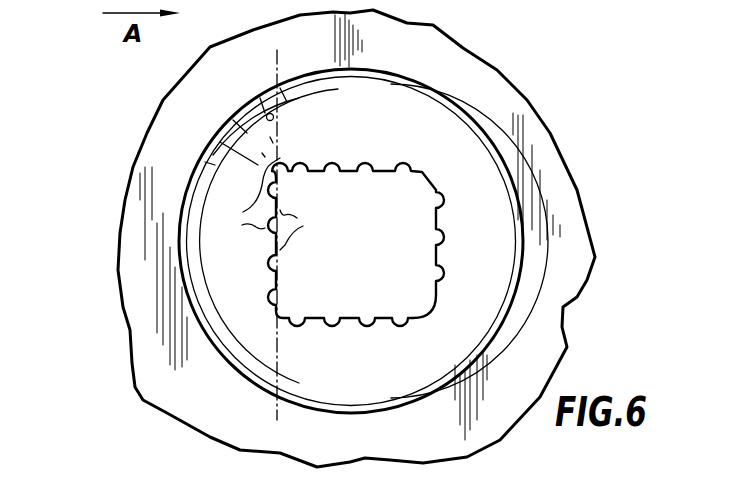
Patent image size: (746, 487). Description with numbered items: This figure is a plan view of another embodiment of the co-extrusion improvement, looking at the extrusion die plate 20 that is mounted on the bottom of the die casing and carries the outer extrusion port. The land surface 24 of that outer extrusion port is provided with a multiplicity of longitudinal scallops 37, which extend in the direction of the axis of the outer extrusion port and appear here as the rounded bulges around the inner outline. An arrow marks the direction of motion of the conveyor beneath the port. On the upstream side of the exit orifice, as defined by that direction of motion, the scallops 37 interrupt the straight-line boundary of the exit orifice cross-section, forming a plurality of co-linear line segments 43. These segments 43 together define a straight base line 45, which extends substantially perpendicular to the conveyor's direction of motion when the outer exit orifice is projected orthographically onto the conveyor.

The extrusion die plate 20 is at (508, 85).
The land surface 24 is at (373, 178).
The longitudinal scallops 37 is at (247, 195).
The co-linear line segments 43 is at (309, 226).
The straight base line 45 is at (262, 108).